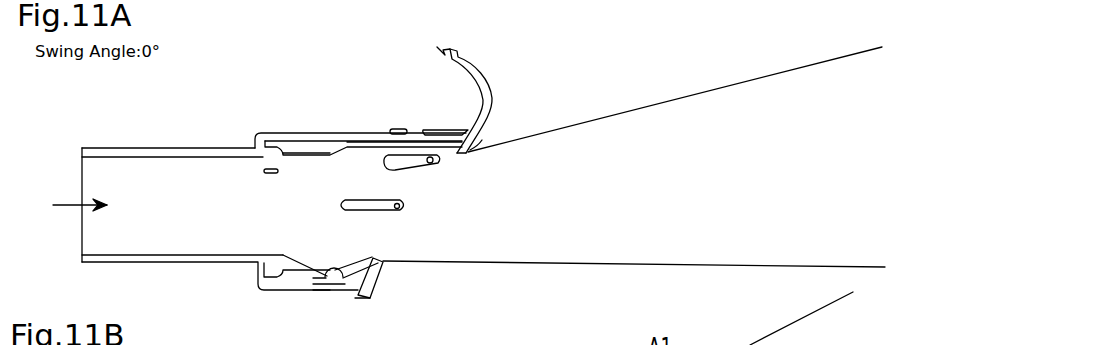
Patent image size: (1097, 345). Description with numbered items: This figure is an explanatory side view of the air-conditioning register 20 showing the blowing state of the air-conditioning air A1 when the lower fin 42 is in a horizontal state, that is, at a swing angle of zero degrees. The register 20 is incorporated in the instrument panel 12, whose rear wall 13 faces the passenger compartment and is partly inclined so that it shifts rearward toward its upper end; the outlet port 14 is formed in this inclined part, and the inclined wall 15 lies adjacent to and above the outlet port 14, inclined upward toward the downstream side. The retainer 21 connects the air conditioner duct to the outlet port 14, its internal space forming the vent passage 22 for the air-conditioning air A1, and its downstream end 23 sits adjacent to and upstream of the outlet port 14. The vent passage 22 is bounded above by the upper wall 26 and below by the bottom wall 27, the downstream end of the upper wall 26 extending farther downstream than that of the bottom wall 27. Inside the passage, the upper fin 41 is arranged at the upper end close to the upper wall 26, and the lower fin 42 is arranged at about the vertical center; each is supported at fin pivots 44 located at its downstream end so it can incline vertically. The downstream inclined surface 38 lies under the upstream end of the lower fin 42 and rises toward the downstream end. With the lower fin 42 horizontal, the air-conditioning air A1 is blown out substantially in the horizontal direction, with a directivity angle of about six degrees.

The instrument panel 12 is at (483, 68).
The rear wall 13 is at (374, 283).
The outlet port 14 is at (384, 258).
The inclined wall 15 is at (478, 147).
The air-conditioning register 20 is at (242, 125).
The retainer 21 is at (156, 147).
The vent passage 22 is at (104, 157).
The downstream end 23 is at (370, 256).
The upper wall 26 is at (347, 147).
The bottom wall 27 is at (293, 290).
The downstream inclined surface 38 is at (325, 292).
The upper fin 41 is at (387, 152).
The lower fin 42 is at (341, 208).
The fin pivot 44 is at (432, 163).
The air-conditioning air A1 is at (644, 110).